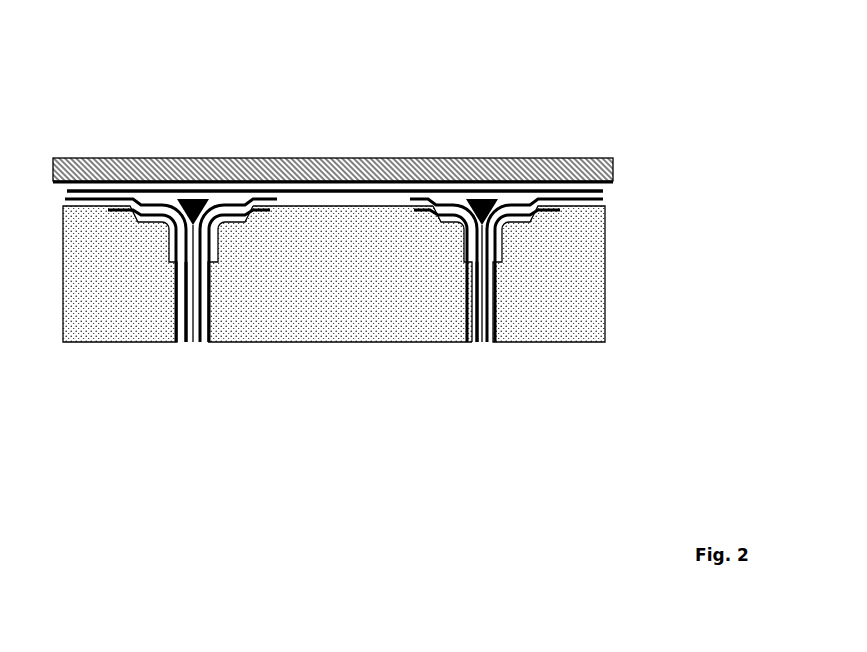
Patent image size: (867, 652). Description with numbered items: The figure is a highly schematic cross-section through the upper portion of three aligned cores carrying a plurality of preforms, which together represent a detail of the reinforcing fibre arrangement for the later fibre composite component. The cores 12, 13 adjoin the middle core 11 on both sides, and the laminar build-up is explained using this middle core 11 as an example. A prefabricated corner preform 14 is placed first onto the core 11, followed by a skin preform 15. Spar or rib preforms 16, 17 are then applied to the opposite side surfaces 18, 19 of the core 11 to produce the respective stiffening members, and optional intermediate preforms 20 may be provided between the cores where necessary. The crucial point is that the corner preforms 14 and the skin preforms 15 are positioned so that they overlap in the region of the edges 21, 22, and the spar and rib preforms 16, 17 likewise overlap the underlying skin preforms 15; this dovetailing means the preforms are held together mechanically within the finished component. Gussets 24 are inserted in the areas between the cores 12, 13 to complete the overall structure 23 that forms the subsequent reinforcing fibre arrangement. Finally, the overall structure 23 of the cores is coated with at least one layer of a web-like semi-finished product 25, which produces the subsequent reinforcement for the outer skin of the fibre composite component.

The middle core 11 is at (343, 286).
The core 12 is at (112, 286).
The core 13 is at (541, 286).
The corner preform 14 is at (208, 302).
The skin preform 15 is at (333, 207).
The spar preform 16 is at (229, 200).
The rib preform 17 is at (450, 203).
The side surface 18 is at (216, 323).
The side surface 19 is at (463, 318).
The intermediate preform 20 is at (193, 342).
The edge 21 is at (247, 242).
The edge 22 is at (452, 237).
The overall structure 23 is at (335, 125).
The gusset 24 is at (190, 198).
The web-like semi-finished product 25 is at (603, 191).